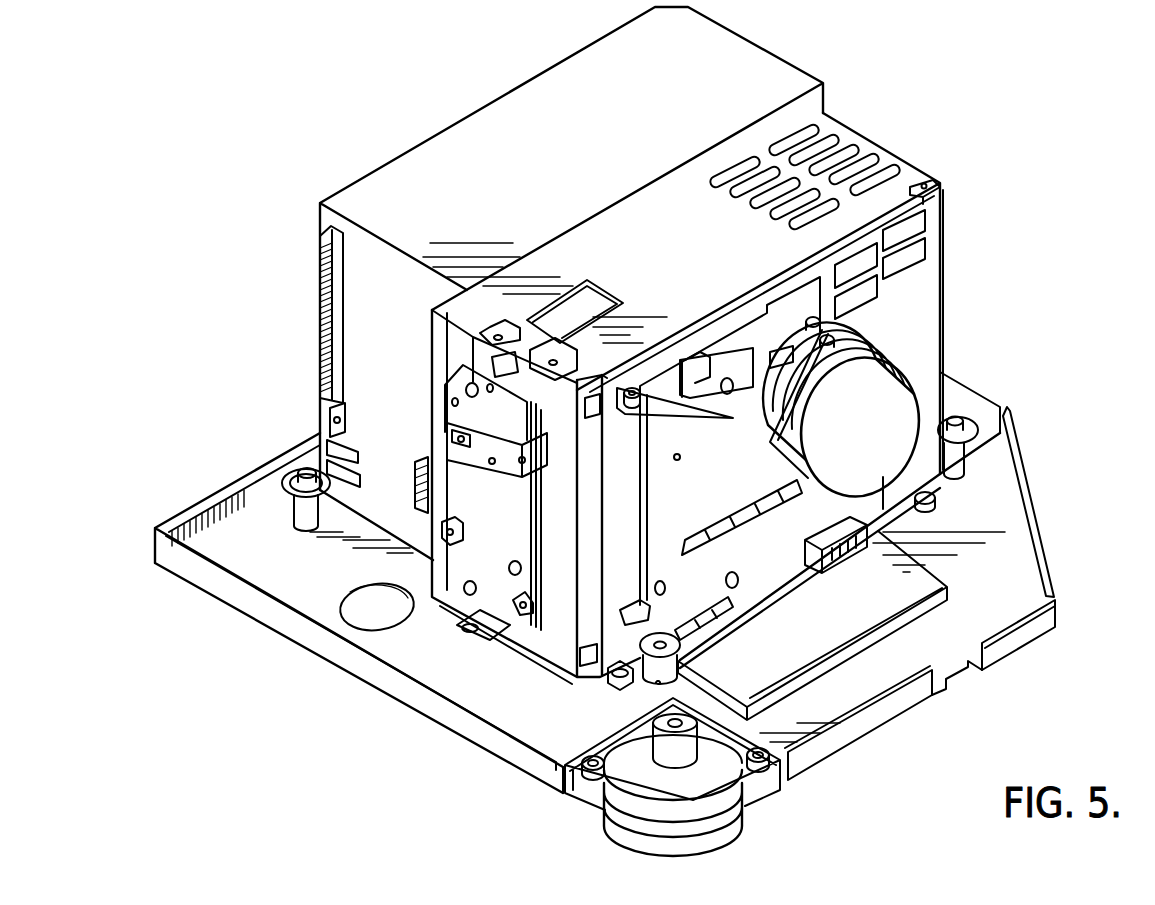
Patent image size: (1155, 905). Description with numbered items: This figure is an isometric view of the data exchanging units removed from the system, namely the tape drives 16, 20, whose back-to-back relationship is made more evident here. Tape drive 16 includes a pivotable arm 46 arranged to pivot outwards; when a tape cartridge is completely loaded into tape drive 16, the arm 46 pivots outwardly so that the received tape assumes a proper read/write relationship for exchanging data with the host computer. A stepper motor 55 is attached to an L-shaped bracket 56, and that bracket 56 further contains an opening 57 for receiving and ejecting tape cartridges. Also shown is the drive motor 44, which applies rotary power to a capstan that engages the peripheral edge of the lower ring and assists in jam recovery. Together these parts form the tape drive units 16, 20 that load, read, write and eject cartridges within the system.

The tape drive 20 is at (477, 132).
The tape drive 16 is at (858, 138).
The L-shaped bracket 56 is at (927, 284).
The stepper motor 55 is at (890, 393).
The pivotable arm 46 is at (692, 413).
The opening 57 is at (562, 577).
The drive motor 44 is at (745, 817).